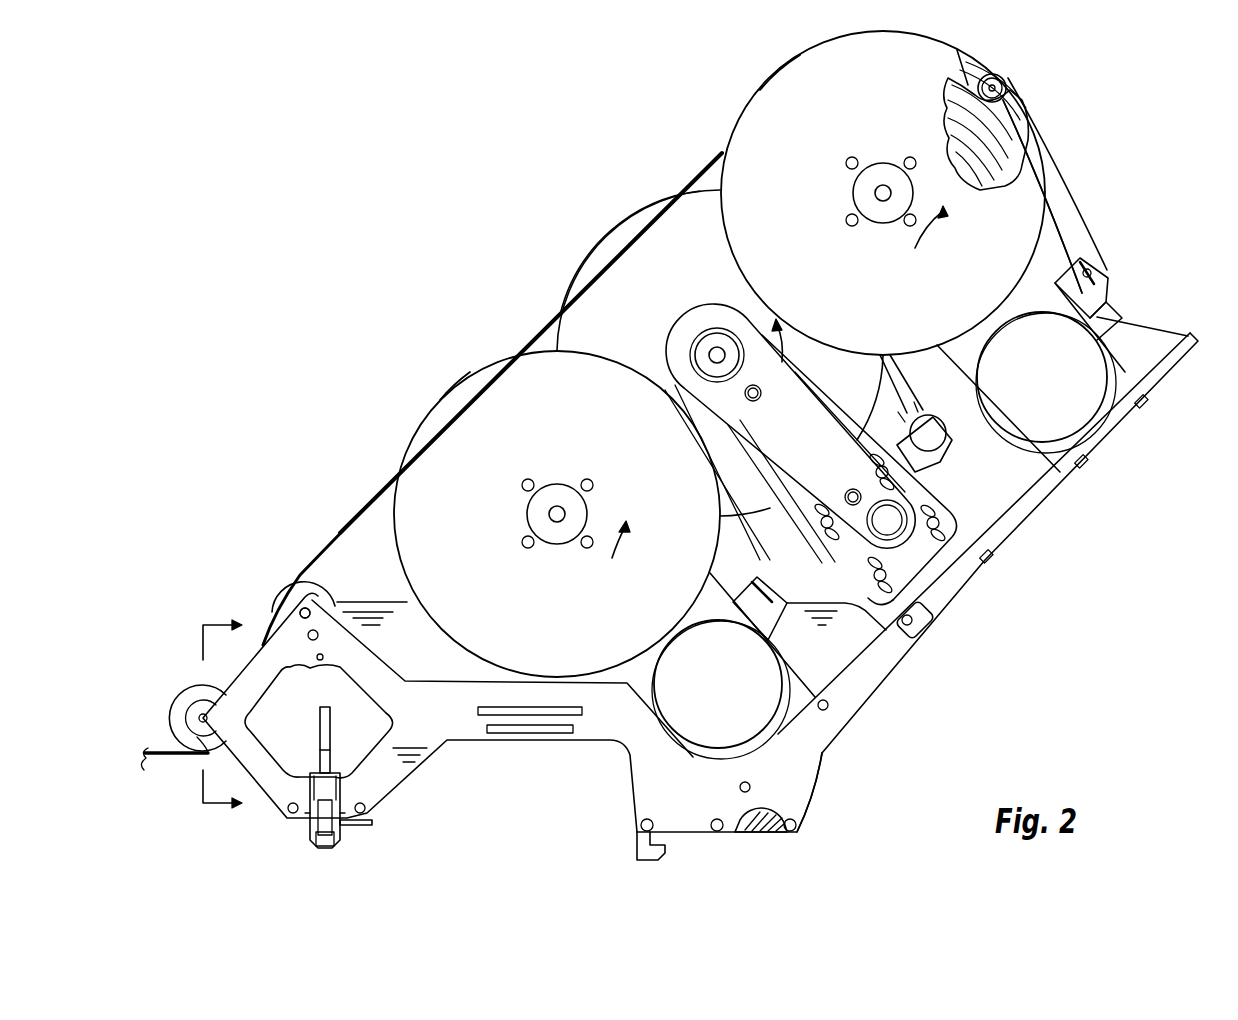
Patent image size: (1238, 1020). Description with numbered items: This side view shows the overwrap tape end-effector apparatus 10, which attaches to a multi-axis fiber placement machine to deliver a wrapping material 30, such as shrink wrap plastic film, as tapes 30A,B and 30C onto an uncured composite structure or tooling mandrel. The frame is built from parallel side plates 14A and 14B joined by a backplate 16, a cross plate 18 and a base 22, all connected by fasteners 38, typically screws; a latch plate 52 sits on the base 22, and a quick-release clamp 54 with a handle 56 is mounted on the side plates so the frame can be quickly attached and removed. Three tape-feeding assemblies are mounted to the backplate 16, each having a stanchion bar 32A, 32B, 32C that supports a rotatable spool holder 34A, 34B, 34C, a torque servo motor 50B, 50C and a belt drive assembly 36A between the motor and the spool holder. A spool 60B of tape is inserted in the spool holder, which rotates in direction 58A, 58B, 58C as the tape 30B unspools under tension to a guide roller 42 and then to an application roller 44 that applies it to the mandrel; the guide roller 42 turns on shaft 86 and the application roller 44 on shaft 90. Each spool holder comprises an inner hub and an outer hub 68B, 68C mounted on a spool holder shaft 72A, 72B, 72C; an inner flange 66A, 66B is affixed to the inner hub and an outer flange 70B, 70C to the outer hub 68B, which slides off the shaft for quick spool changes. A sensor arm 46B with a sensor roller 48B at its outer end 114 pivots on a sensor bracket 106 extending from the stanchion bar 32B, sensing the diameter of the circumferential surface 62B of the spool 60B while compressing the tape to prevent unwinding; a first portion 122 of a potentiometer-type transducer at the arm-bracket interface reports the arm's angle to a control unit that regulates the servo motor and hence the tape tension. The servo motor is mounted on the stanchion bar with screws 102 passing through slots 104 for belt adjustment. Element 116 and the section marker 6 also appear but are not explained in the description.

The overwrap tape end-effector apparatus 10 is at (222, 250).
The side plate 14A is at (438, 669).
The side plate 14B is at (455, 719).
The backplate 16 is at (1025, 503).
The cross plate 18 is at (362, 825).
The base 22 is at (762, 828).
The wrapping material 30 is at (150, 742).
The tapes 30A,B is at (360, 525).
The tape 30B is at (660, 215).
The tape 30C is at (590, 512).
The stanchion bar 32A is at (905, 572).
The stanchion bar 32B is at (1108, 350).
The stanchion bar 32C is at (818, 740).
The spool holder 34A is at (655, 326).
The spool holder 34B is at (880, 311).
The spool holder 34C is at (495, 466).
The belt drive assembly 36A is at (805, 442).
The fasteners 38 is at (1088, 475).
The guide roller 42 is at (300, 585).
The application roller 44 is at (182, 698).
The sensor arm 46B is at (1095, 242).
The sensor roller 48B is at (1013, 92).
The torque servo motor 50B is at (1062, 387).
The torque servo motor 50C is at (740, 700).
The latch plate 52 is at (640, 845).
The quick-release clamp 54 is at (312, 800).
The handle 56 is at (323, 740).
The rotation direction 58A is at (790, 348).
The rotation direction 58B is at (943, 243).
The rotation direction 58C is at (625, 556).
The spool of overwrap tape 60B is at (1010, 143).
The circumferential surface 62B is at (975, 72).
The inner flange 66A is at (592, 265).
The inner flange 66B is at (1005, 80).
The outer hub 68B is at (855, 197).
The outer hub 68C is at (582, 512).
The outer flange 70B is at (787, 75).
The outer flange 70C is at (472, 382).
The spool holder shaft 72A is at (717, 350).
The spool holder shaft 72B is at (875, 190).
The spool holder shaft 72C is at (557, 512).
The shaft 86 is at (305, 610).
The shaft 90 is at (197, 737).
The screws 102 is at (915, 572).
The slots 104 is at (950, 520).
The sensor bracket 106 is at (1090, 303).
The outer end 114 is at (1030, 118).
The bracket 116 is at (1110, 278).
The first portion of potentiometer 122 is at (875, 640).
The section line 6 is at (222, 715).